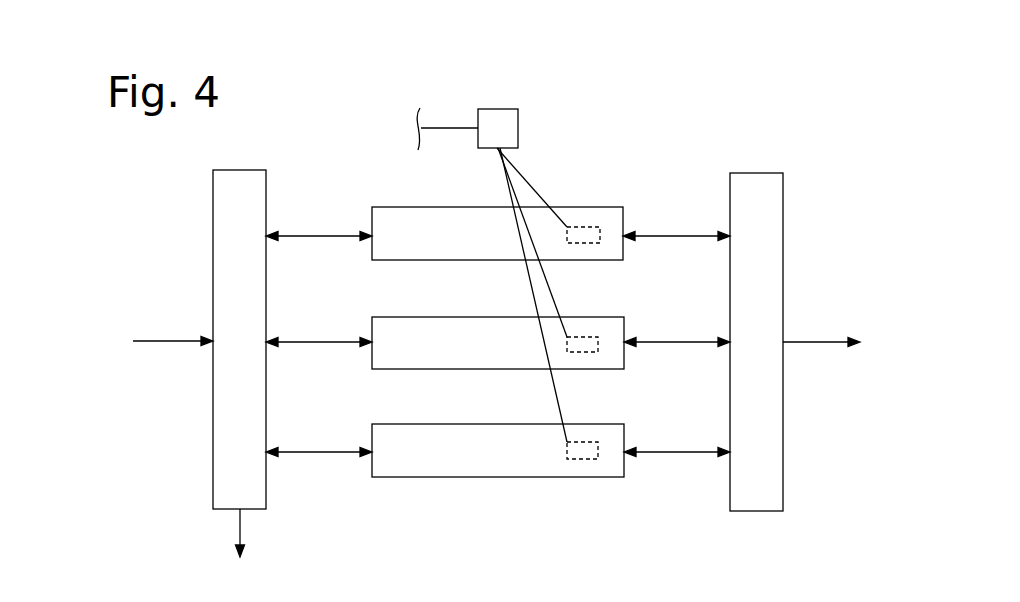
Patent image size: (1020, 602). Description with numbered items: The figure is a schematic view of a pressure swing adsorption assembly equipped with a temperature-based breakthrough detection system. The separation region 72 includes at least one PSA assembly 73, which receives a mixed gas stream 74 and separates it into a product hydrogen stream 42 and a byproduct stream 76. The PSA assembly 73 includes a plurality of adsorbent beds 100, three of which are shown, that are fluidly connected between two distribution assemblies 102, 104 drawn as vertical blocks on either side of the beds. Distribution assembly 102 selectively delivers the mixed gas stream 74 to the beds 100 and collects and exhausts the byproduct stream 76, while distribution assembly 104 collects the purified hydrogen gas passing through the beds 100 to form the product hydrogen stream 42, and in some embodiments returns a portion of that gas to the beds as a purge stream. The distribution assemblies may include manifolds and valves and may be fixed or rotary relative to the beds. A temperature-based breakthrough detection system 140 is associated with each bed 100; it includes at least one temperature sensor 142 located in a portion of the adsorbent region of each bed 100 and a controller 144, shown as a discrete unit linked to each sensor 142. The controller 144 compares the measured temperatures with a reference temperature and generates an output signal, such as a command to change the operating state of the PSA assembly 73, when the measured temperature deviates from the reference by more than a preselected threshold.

The product hydrogen stream 42 is at (812, 342).
The separation region 72 is at (150, 190).
The PSA assembly 73 is at (158, 246).
The mixed gas stream 74 is at (173, 346).
The byproduct stream 76 is at (238, 530).
The adsorbent bed 100 is at (391, 206).
The distribution assembly 102 is at (243, 170).
The distribution assembly 104 is at (757, 172).
The temperature-based breakthrough detection system 140 is at (467, 92).
The temperature sensor 142 is at (586, 227).
The controller 144 is at (518, 130).